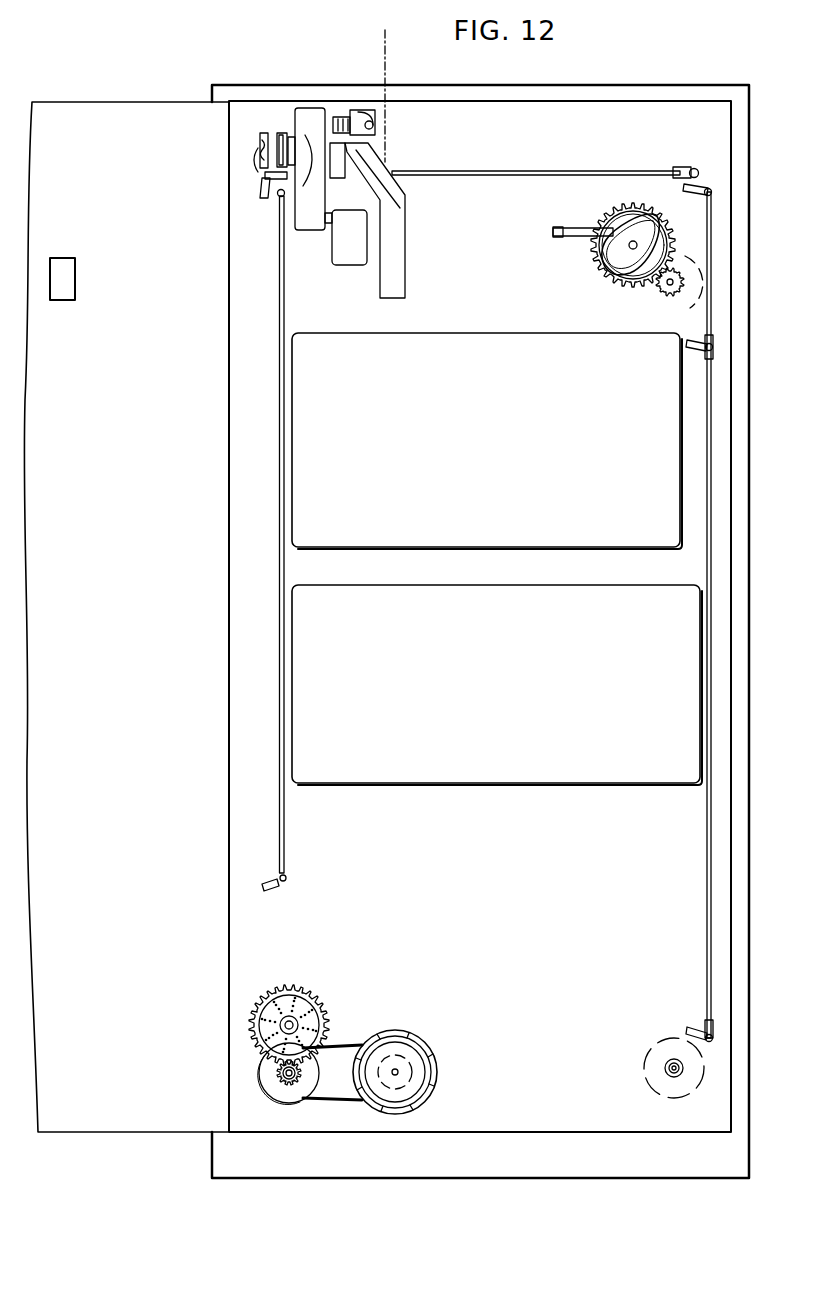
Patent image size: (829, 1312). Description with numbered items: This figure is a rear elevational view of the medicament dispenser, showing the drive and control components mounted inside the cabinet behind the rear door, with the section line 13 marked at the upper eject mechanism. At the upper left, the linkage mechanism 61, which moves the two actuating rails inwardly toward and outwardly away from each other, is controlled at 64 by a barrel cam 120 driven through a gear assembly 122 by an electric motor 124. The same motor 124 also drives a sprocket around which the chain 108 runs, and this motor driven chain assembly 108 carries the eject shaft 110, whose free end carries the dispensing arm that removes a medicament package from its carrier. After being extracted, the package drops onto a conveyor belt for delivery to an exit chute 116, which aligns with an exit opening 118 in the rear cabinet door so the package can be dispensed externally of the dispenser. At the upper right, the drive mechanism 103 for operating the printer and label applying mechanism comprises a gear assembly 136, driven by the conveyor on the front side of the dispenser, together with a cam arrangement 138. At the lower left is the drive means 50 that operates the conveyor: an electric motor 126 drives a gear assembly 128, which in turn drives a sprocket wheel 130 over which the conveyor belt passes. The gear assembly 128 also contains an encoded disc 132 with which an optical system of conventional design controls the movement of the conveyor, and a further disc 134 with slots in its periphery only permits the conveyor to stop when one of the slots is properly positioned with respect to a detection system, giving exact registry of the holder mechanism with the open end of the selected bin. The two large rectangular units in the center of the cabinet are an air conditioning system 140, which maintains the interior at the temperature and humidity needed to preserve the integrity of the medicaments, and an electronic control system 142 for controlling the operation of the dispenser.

The drive means 50 is at (364, 1002).
The linkage assembly 61 is at (708, 812).
The motor driven control 64 is at (247, 175).
The drive mechanism 103 is at (602, 255).
The motor driven chain assembly 108 is at (342, 117).
The shaft 110 is at (371, 112).
The exit chute 116 is at (406, 261).
The exit opening 118 is at (60, 287).
The barrel cam 120 is at (277, 140).
The gear assembly 122 is at (305, 232).
The electric motor 124 is at (352, 267).
The electric motor 126 is at (418, 1074).
The gear assembly 128 is at (282, 1072).
The sprocket wheel 130 is at (286, 1102).
The encoded disc 132 is at (296, 990).
The further disc 134 is at (421, 1040).
The gear assembly 136 is at (660, 290).
The cam arrangement 138 is at (630, 237).
The air conditioning system 140 is at (518, 457).
The electronic control system 142 is at (514, 697).
The section line 13- 13 is at (392, 62).